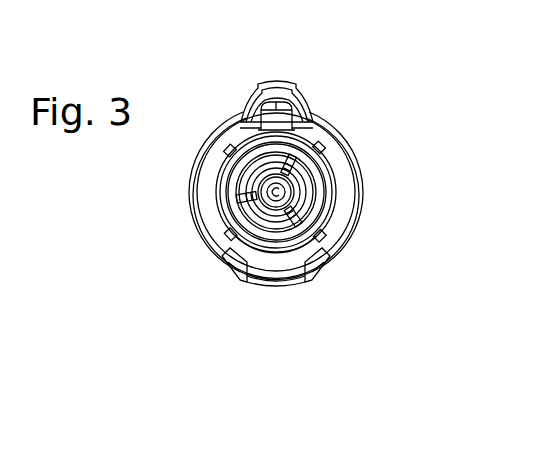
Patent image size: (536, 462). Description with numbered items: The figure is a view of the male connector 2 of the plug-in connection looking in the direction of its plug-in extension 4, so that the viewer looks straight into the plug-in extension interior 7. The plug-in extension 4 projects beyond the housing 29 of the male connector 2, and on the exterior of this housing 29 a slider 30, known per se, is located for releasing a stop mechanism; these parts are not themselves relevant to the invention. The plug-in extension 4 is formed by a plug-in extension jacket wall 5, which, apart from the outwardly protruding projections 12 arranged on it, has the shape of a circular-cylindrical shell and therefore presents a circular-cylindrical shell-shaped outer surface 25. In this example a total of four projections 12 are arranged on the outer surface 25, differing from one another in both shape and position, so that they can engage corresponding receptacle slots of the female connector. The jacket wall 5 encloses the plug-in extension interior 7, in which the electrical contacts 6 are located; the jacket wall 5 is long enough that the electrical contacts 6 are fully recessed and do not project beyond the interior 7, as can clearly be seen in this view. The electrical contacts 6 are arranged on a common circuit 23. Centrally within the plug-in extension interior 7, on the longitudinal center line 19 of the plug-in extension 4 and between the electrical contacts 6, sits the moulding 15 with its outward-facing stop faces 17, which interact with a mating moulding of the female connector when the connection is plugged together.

The male connector 2 is at (363, 131).
The plug-in extension 4 is at (330, 209).
The plug-in extension jacket wall 5 is at (269, 240).
The electrical contacts 6 is at (250, 169).
The plug-in extension interior 7 is at (235, 202).
The outwardly protruding projections 12 is at (233, 145).
The moulding 15 is at (286, 174).
The stop faces 17 is at (276, 267).
The longitudinal center line 19 is at (311, 183).
The common circuit 23 is at (229, 191).
The outer surface 25 is at (281, 191).
The housing 29 is at (345, 222).
The slider 30 is at (258, 96).